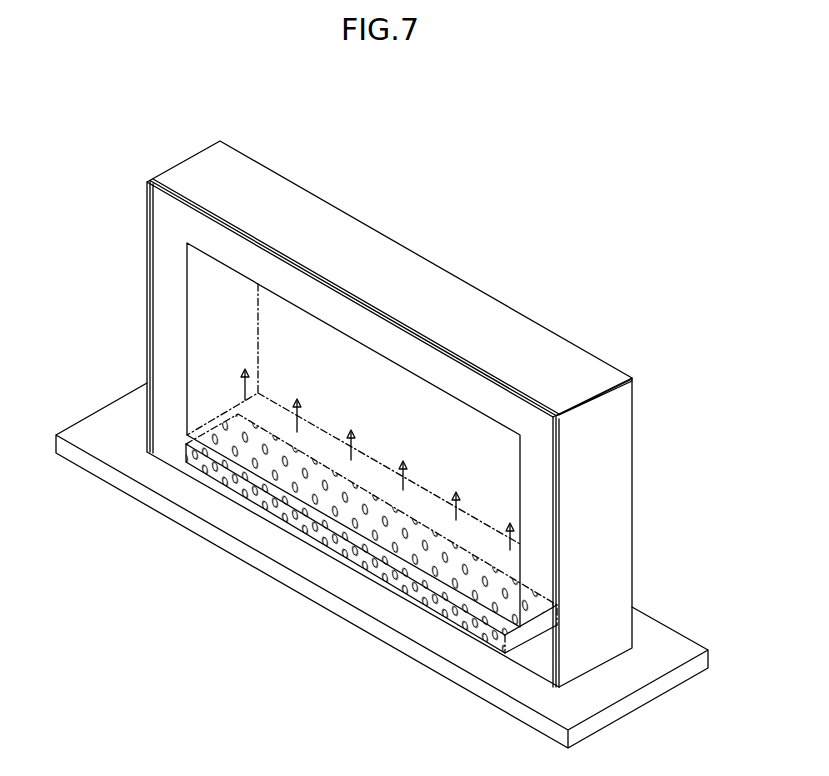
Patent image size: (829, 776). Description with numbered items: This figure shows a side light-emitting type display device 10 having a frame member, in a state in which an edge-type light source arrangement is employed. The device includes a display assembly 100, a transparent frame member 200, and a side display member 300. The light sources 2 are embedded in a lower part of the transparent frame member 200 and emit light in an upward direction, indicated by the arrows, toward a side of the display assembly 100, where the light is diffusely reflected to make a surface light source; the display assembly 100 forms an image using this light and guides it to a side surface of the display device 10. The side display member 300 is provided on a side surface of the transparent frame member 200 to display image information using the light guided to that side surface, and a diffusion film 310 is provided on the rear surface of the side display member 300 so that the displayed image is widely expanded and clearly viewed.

The side light-emitting type display device 10 is at (273, 108).
The light sources 2 is at (437, 615).
The display assembly 100 is at (415, 402).
The transparent frame member 200 is at (383, 243).
The side display member 300 is at (627, 407).
The diffusion film 310 is at (613, 373).